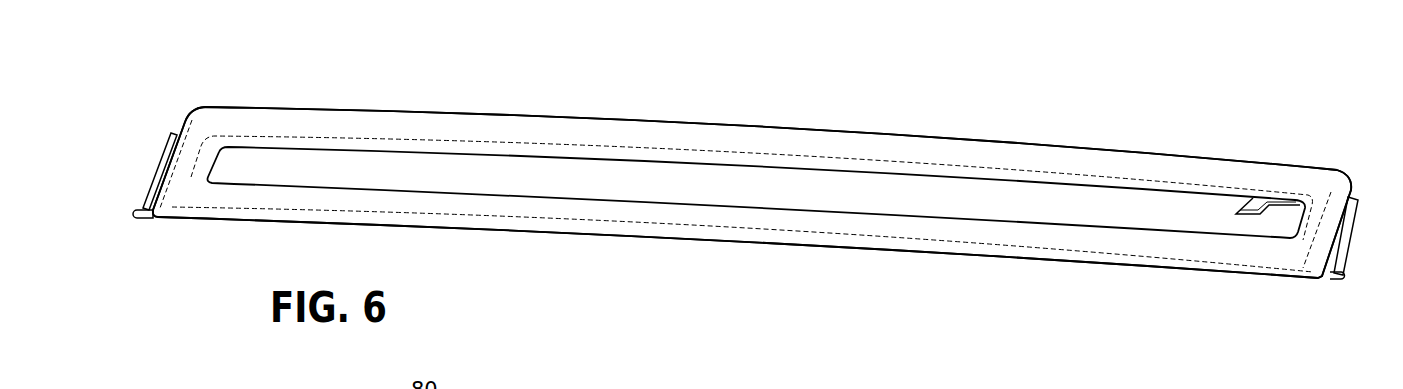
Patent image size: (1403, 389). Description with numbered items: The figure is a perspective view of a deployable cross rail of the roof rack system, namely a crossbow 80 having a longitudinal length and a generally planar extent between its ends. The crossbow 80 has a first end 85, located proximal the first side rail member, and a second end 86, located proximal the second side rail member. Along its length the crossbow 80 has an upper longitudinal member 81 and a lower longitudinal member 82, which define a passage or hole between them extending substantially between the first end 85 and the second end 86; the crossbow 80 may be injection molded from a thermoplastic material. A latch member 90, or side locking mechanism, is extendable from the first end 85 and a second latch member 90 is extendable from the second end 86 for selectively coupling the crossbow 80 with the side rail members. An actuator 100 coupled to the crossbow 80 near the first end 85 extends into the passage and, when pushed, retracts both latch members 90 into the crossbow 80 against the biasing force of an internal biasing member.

The crossbow 80 is at (829, 125).
The upper longitudinal member 81 is at (507, 110).
The lower longitudinal member 82 is at (531, 216).
The first end 85 is at (1328, 180).
The second end 86 is at (212, 120).
The latch member 90 is at (153, 177).
The actuator 100 is at (1228, 212).